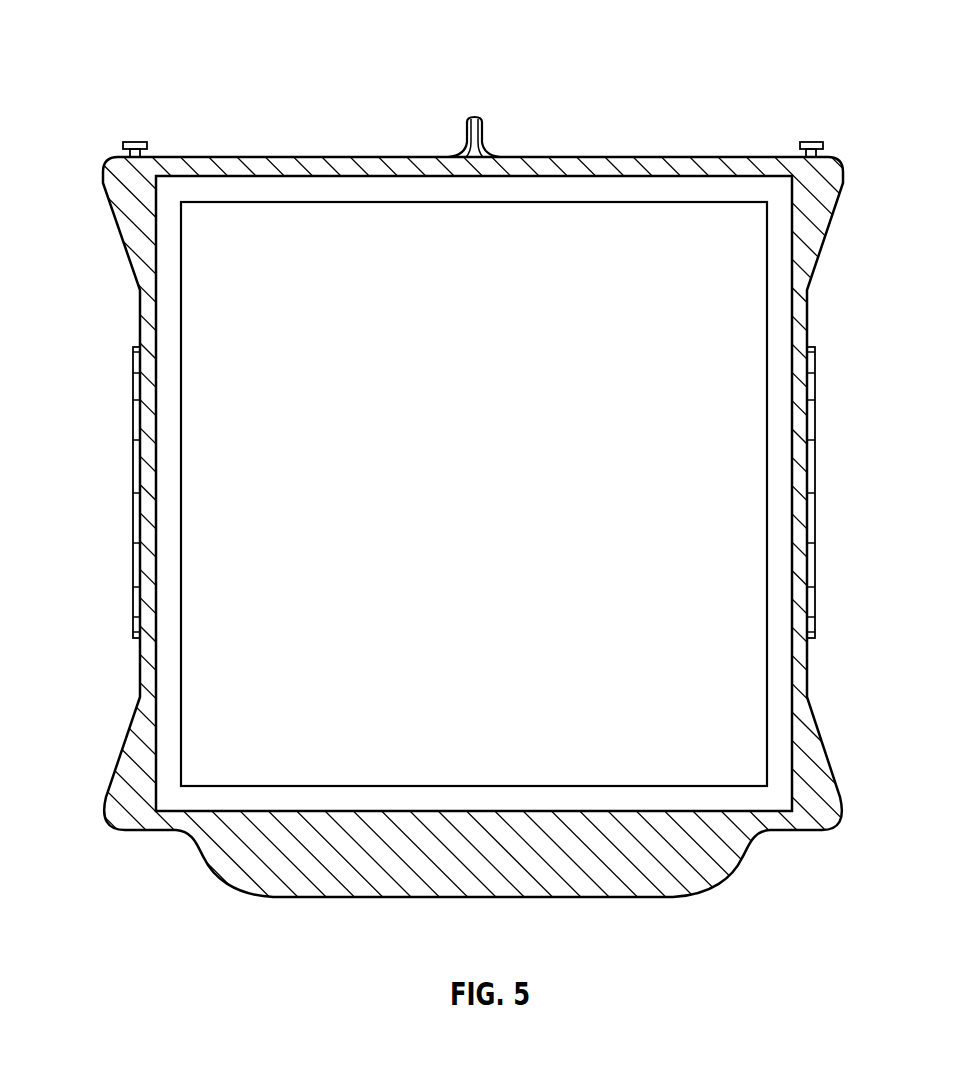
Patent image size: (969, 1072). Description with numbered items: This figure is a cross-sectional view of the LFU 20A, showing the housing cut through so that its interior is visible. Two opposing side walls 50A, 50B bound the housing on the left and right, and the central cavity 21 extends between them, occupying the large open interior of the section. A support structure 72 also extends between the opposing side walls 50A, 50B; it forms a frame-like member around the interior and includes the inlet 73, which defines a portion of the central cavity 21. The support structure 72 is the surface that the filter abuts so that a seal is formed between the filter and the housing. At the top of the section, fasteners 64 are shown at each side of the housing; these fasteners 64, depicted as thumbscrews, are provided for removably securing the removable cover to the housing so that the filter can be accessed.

The LFU 20A is at (543, 28).
The support structure 72 is at (697, 190).
The inlet 73 is at (622, 215).
The central cavity 21 is at (489, 508).
The fasteners 64 is at (136, 142).
The side wall 50A is at (150, 306).
The side wall 50B is at (798, 330).